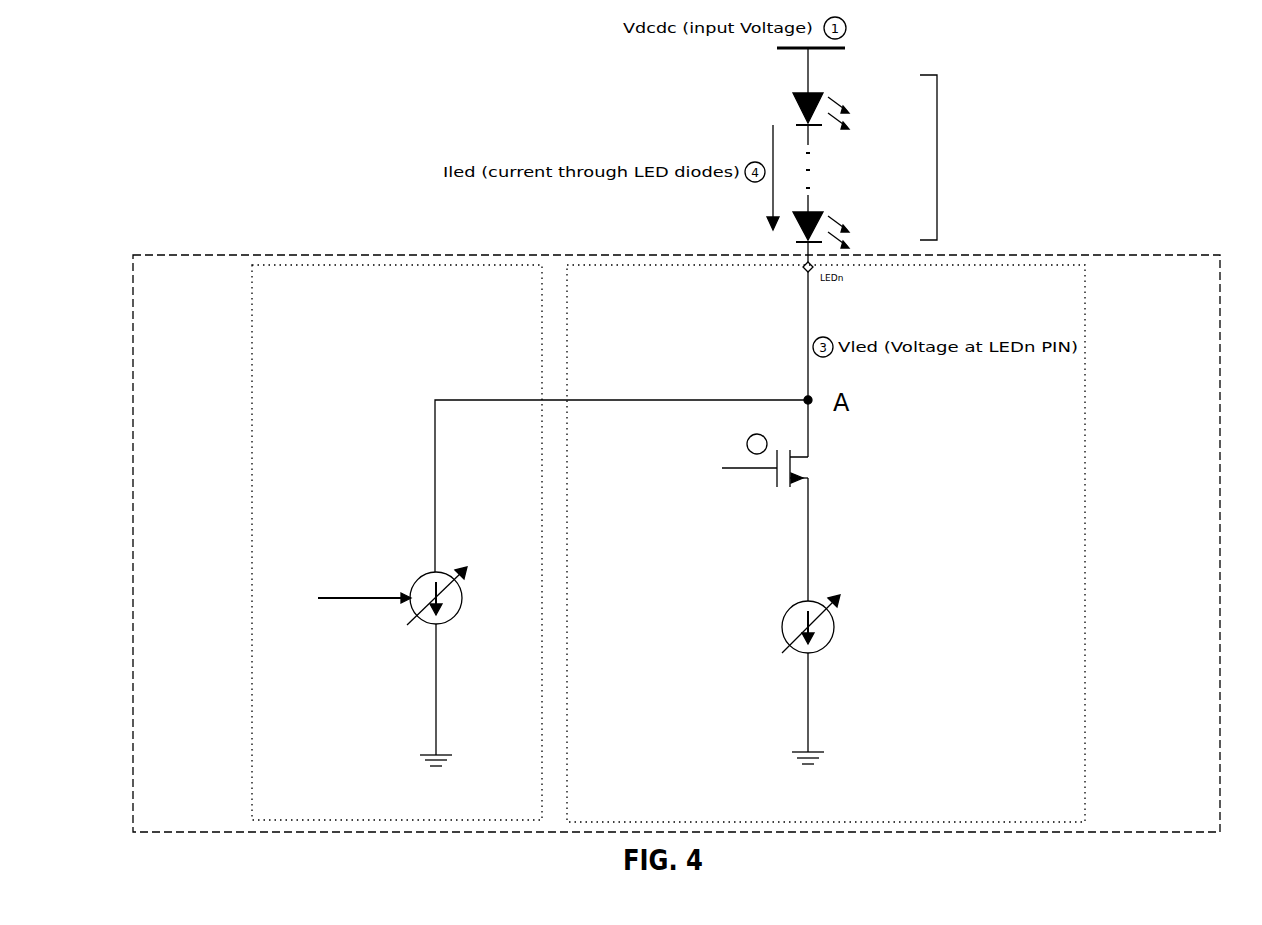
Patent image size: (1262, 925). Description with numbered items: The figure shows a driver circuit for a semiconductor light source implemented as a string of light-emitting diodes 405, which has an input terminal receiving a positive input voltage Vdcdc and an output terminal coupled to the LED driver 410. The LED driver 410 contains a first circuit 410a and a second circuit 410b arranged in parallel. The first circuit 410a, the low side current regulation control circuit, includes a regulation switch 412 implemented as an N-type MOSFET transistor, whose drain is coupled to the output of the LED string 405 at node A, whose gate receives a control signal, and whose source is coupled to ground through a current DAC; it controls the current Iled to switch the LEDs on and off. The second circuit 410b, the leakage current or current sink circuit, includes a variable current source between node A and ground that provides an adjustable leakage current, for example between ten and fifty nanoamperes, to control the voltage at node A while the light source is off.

The string of light-emitting diodes 405 is at (937, 157).
The LED driver 410 is at (132, 430).
The first circuit 410a is at (1087, 400).
The second circuit 410b is at (253, 393).
The regulation switch 412 is at (812, 453).